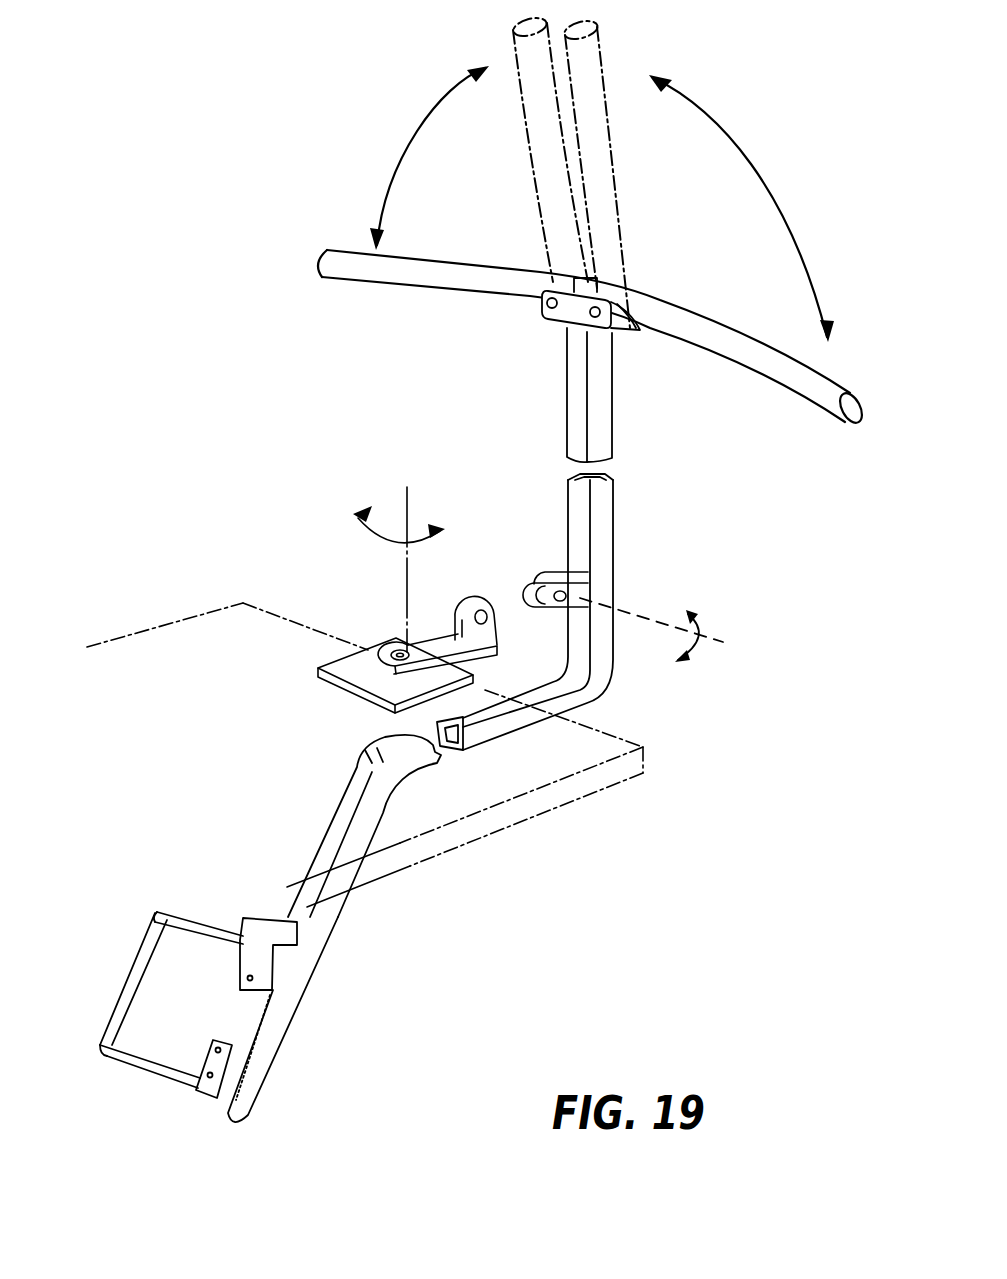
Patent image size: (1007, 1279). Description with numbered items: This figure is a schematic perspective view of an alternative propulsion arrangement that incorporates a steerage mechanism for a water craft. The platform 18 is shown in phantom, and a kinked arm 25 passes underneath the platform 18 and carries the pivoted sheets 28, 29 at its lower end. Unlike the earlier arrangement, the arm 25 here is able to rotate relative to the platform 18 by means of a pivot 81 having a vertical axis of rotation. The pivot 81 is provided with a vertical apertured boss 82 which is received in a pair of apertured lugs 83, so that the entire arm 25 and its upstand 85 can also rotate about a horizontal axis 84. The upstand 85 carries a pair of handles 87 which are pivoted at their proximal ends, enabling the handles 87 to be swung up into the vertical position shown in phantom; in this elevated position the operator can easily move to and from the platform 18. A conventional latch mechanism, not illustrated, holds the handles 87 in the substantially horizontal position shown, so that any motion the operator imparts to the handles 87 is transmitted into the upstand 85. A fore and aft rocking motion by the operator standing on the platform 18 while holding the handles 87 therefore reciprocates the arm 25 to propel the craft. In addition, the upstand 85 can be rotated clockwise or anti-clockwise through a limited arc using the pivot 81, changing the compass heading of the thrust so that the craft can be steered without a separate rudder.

The platform 18 is at (208, 640).
The kinked arm 25 is at (333, 927).
The pivoted sheet 28 is at (150, 1000).
The pivoted sheet 29 is at (250, 1040).
The pivot 81 is at (393, 593).
The vertical apertured boss 82 is at (487, 623).
The apertured lugs 83 is at (538, 570).
The horizontal axis 84 is at (718, 640).
The upstand 85 is at (605, 433).
The handles 87 is at (607, 136).